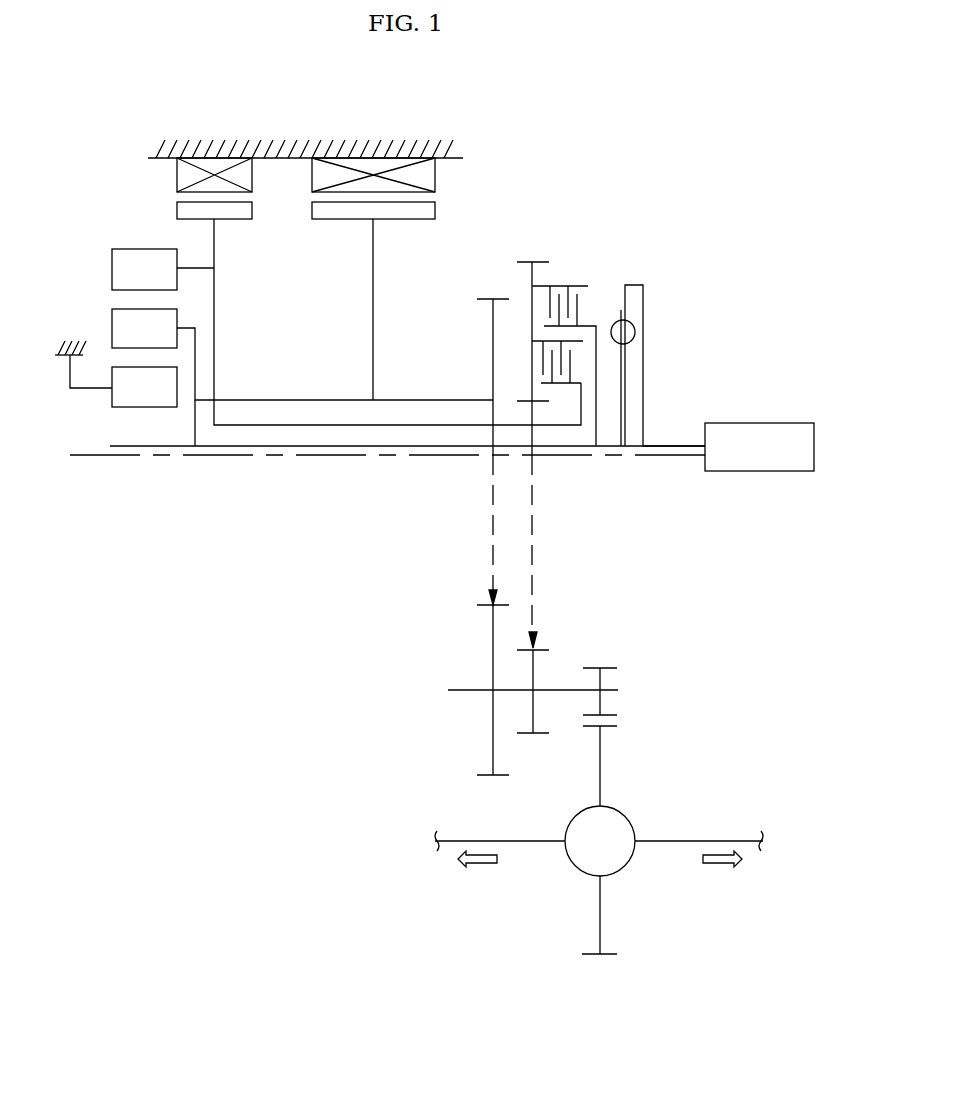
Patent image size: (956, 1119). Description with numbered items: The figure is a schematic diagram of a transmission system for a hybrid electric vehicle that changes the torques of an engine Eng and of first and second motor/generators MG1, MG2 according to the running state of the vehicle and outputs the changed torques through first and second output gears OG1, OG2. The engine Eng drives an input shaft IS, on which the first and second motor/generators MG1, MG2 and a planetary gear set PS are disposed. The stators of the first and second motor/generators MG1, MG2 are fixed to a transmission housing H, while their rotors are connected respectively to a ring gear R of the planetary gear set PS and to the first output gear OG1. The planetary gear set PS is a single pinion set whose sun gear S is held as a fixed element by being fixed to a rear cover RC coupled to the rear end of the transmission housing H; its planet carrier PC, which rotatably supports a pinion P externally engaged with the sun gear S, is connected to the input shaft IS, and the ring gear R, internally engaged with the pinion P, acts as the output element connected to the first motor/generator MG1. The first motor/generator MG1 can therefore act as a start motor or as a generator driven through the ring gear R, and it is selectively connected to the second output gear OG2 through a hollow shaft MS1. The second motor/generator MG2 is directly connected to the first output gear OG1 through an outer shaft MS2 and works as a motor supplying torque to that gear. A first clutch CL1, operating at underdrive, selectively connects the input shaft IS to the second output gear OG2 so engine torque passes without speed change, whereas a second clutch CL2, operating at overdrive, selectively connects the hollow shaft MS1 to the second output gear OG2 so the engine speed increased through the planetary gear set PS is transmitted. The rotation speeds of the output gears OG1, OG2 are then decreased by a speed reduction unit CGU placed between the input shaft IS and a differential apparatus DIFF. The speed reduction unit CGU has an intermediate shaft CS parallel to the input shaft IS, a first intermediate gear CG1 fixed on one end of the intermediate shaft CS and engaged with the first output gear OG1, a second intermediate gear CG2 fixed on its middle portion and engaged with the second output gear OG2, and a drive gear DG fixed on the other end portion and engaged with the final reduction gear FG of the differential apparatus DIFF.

The transmission housing H is at (268, 152).
The first motor/generator MG1 is at (162, 194).
The second motor/generator MG2 is at (452, 200).
The ring gear R is at (163, 269).
The pinion P is at (144, 328).
The sun gear S is at (144, 387).
The rear cover RC is at (79, 338).
The planet carrier PC is at (197, 327).
The planetary gear set PS is at (188, 414).
The input shaft IS is at (172, 448).
The hollow shaft MS1 is at (288, 424).
The outer shaft MS2 is at (396, 399).
The first output gear OG1 is at (492, 336).
The second output gear OG2 is at (530, 293).
The first clutch CL1 is at (580, 276).
The second clutch CL2 is at (588, 372).
The engine Eng is at (719, 378).
The speed reduction unit CGU is at (400, 687).
The first intermediate gear CG1 is at (492, 640).
The second intermediate gear CG2 is at (533, 673).
The intermediate shaft CS is at (468, 692).
The drive gear DG is at (601, 678).
The final reduction gear FG is at (601, 751).
The differential apparatus DIFF is at (646, 814).